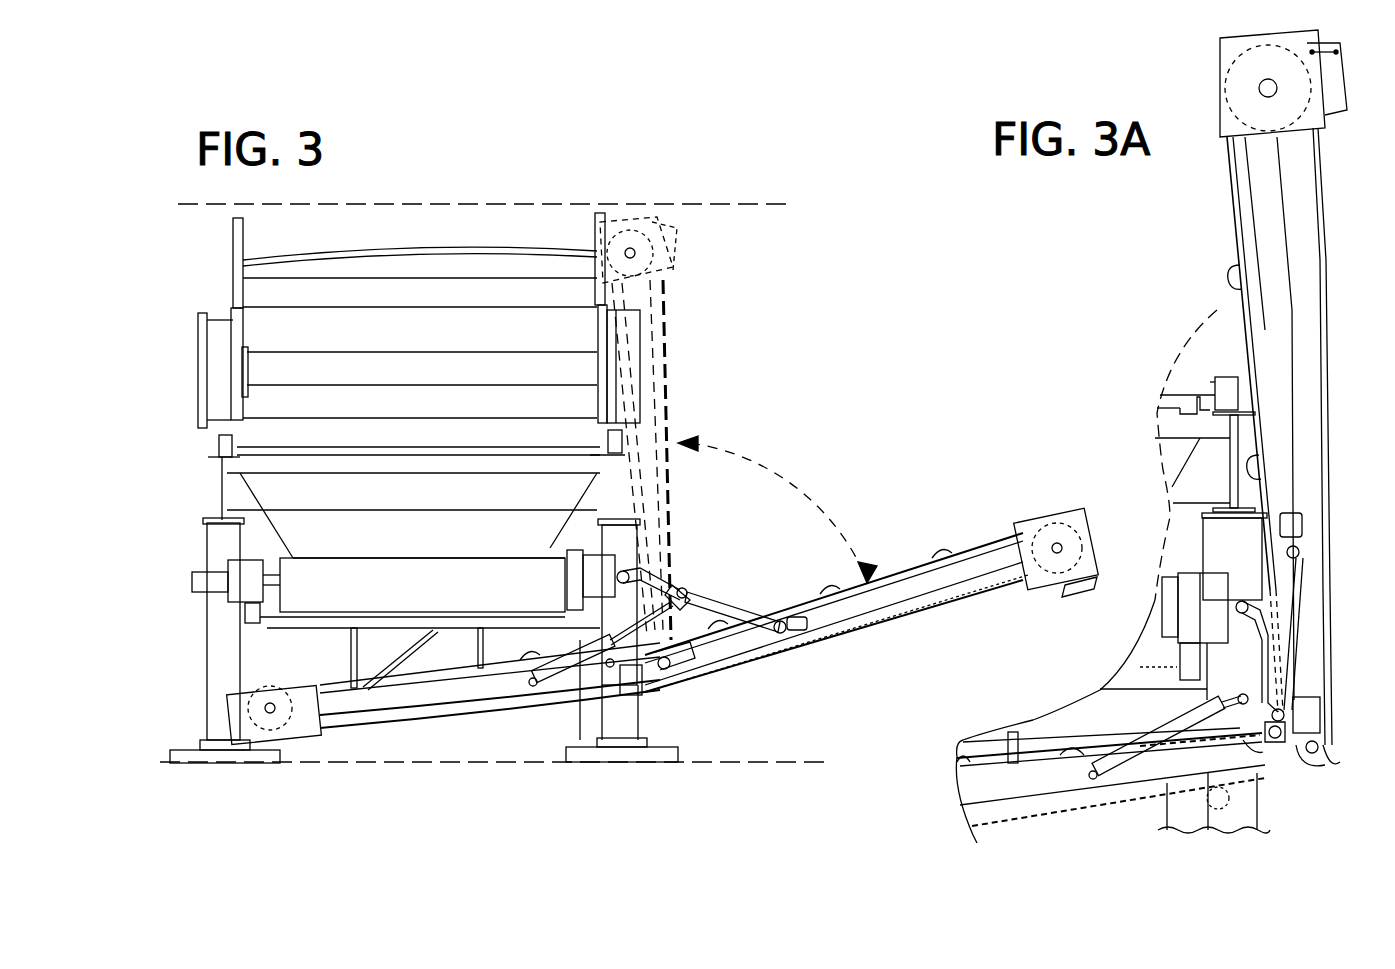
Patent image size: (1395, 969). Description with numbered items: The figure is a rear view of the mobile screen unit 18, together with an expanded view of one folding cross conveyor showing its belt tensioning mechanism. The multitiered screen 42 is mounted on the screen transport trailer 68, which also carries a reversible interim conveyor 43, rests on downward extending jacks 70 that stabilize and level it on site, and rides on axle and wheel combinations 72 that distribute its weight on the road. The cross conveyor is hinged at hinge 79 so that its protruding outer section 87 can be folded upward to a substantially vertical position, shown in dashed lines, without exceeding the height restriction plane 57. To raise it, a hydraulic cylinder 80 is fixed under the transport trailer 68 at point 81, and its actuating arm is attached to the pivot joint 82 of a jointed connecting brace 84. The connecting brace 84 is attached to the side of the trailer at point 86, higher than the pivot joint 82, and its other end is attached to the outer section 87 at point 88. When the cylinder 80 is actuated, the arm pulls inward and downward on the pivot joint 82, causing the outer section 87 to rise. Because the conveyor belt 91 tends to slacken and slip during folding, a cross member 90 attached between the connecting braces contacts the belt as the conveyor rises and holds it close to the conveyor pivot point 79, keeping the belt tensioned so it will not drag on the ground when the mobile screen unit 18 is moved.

In FIG. 3, the mobile screen unit 18 is at (700, 331).
In FIG. 3, the multitiered screen 42 is at (232, 296).
In FIG. 3, the reversible interim conveyor 43 is at (450, 604).
In FIG. 3, the height restriction plane 57 is at (716, 206).
In FIG. 3, the screen transport trailer 68 is at (262, 632).
In FIG. 3, the jack 70 is at (227, 760).
In FIG. 3, the axle and wheel combination 72 is at (272, 740).
In FIG. 3, the hinge 79 is at (670, 673).
In FIG. 3A, the hinge 79 is at (1315, 755).
In FIG. 3, the hydraulic cylinder 80 is at (620, 690).
In FIG. 3A, the hydraulic cylinder 80 is at (1162, 747).
In FIG. 3, the cylinder mounting point 81 is at (532, 690).
In FIG. 3A, the cylinder mounting point 81 is at (1103, 805).
In FIG. 3, the pivot joint 82 is at (690, 593).
In FIG. 3A, the pivot joint 82 is at (1285, 712).
In FIG. 3, the connecting brace 84 is at (738, 610).
In FIG. 3A, the connecting brace 84 is at (1290, 612).
In FIG. 3, the trailer attachment point 86 is at (615, 568).
In FIG. 3A, the trailer attachment point 86 is at (1243, 600).
In FIG. 3, the outer section 87 is at (678, 268).
In FIG. 3A, the outer section 87 is at (1265, 185).
In FIG. 3, the brace attachment point 88 is at (783, 640).
In FIG. 3A, the brace attachment point 88 is at (1300, 552).
In FIG. 3, the cross member 90 is at (685, 583).
In FIG. 3A, the cross member 90 is at (1275, 740).
In FIG. 3, the conveyor belt 91 is at (455, 712).
In FIG. 3A, the conveyor belt 91 is at (1248, 355).